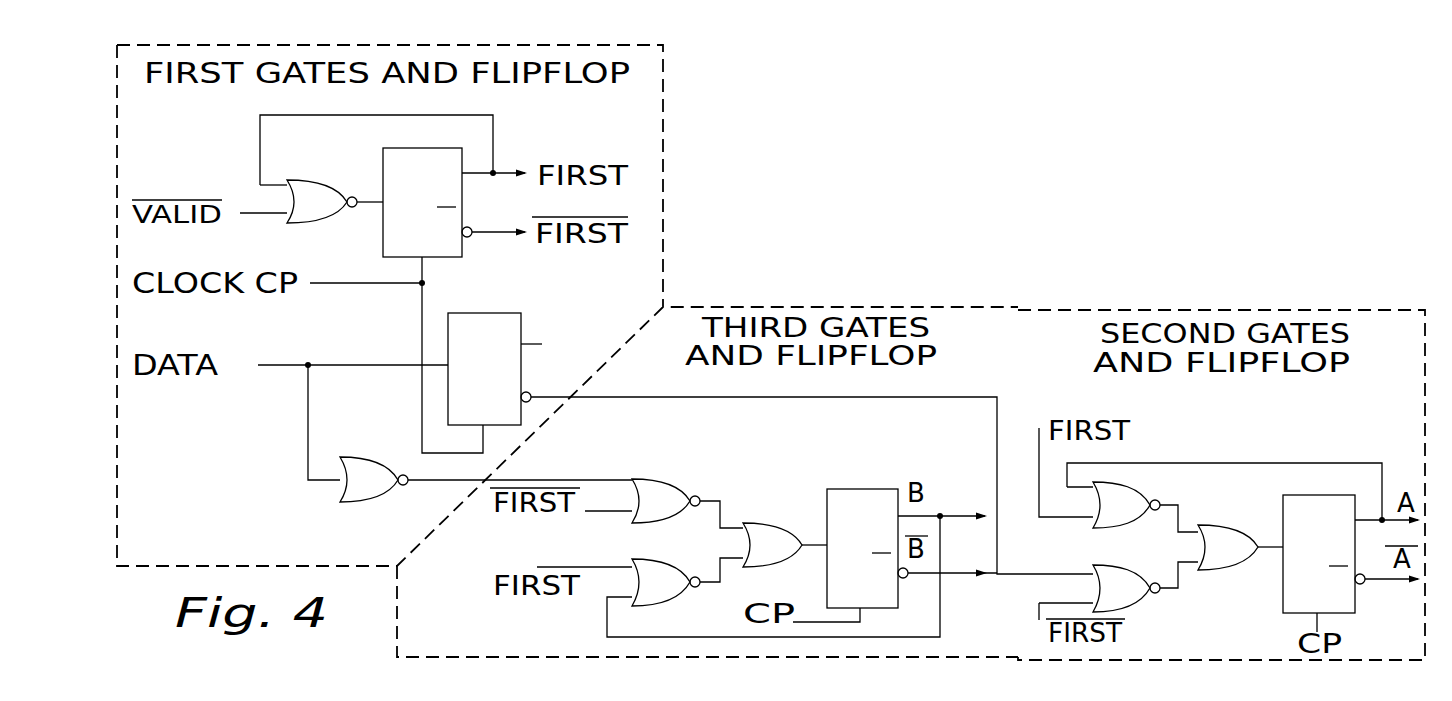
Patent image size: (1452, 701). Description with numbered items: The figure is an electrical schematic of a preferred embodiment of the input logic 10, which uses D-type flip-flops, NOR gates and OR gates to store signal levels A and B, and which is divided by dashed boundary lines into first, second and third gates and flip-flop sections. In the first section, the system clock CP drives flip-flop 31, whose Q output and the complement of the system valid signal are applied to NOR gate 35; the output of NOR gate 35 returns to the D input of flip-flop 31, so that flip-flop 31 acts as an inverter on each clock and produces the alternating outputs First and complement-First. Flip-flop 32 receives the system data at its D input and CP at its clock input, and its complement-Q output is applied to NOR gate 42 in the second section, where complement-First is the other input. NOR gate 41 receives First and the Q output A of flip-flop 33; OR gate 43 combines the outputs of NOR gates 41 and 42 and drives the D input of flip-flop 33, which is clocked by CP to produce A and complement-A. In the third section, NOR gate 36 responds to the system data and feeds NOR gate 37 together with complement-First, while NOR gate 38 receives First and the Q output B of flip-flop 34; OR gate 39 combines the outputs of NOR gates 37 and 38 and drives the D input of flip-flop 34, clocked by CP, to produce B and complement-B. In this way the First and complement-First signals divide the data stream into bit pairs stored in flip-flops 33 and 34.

The input logic 10 is at (880, 236).
The D-type flip-flop 31 is at (405, 148).
The flip-flop 32 is at (500, 313).
The flip-flop 33 is at (1325, 495).
The flip-flop 34 is at (862, 489).
The NOR gate 35 is at (322, 178).
The NOR gate 36 is at (378, 447).
The NOR gate 37 is at (678, 462).
The NOR gate 38 is at (692, 553).
The OR gate 39 is at (775, 522).
The NOR gate 41 is at (1140, 495).
The NOR gate 42 is at (1120, 566).
The OR gate 43 is at (1235, 524).